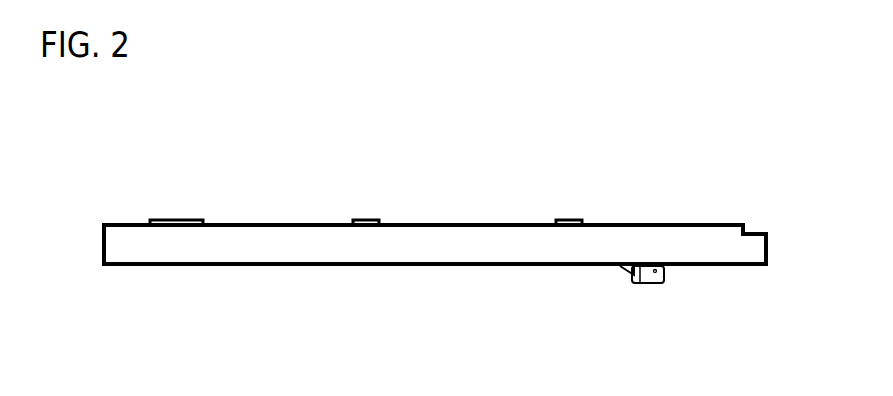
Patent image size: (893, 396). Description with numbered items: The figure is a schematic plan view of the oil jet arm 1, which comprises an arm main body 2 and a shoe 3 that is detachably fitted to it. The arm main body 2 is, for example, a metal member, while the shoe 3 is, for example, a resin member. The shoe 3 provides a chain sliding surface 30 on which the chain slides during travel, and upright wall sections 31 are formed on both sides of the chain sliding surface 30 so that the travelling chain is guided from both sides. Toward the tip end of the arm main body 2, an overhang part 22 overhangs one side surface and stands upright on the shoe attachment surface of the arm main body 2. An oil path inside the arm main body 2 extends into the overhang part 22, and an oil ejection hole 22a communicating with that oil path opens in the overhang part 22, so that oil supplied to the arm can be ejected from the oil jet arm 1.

The oil jet arm 1 is at (457, 183).
The arm main body 2 is at (617, 273).
The shoe 3 is at (130, 223).
The overhang part 22 is at (665, 272).
The oil ejection hole 22a is at (655, 273).
The chain sliding surface 30 is at (172, 266).
The upright wall sections 31 is at (320, 264).